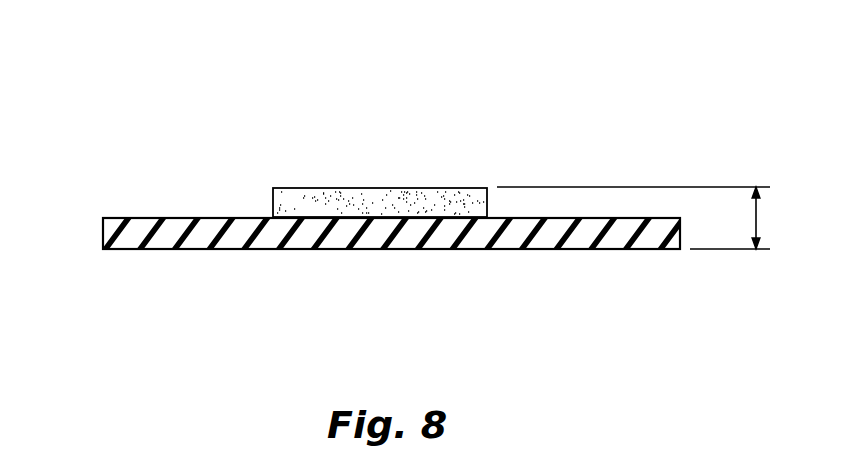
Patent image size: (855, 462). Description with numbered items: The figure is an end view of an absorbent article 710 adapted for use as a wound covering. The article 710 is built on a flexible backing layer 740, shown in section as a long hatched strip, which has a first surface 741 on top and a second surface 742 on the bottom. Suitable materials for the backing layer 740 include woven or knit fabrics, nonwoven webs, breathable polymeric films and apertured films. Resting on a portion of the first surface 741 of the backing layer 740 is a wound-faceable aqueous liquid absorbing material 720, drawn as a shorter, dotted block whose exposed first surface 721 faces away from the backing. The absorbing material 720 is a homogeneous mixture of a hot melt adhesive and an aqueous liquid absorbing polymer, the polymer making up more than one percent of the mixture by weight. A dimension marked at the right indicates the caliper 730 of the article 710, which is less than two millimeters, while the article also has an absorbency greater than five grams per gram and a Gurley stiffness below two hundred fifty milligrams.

The absorbent article 710 is at (160, 101).
The aqueous liquid absorbing material 720 is at (272, 196).
The first surface 721 is at (362, 188).
The caliper 730 is at (758, 218).
The flexible backing layer 740 is at (103, 235).
The first surface 741 is at (168, 216).
The second surface 742 is at (173, 250).